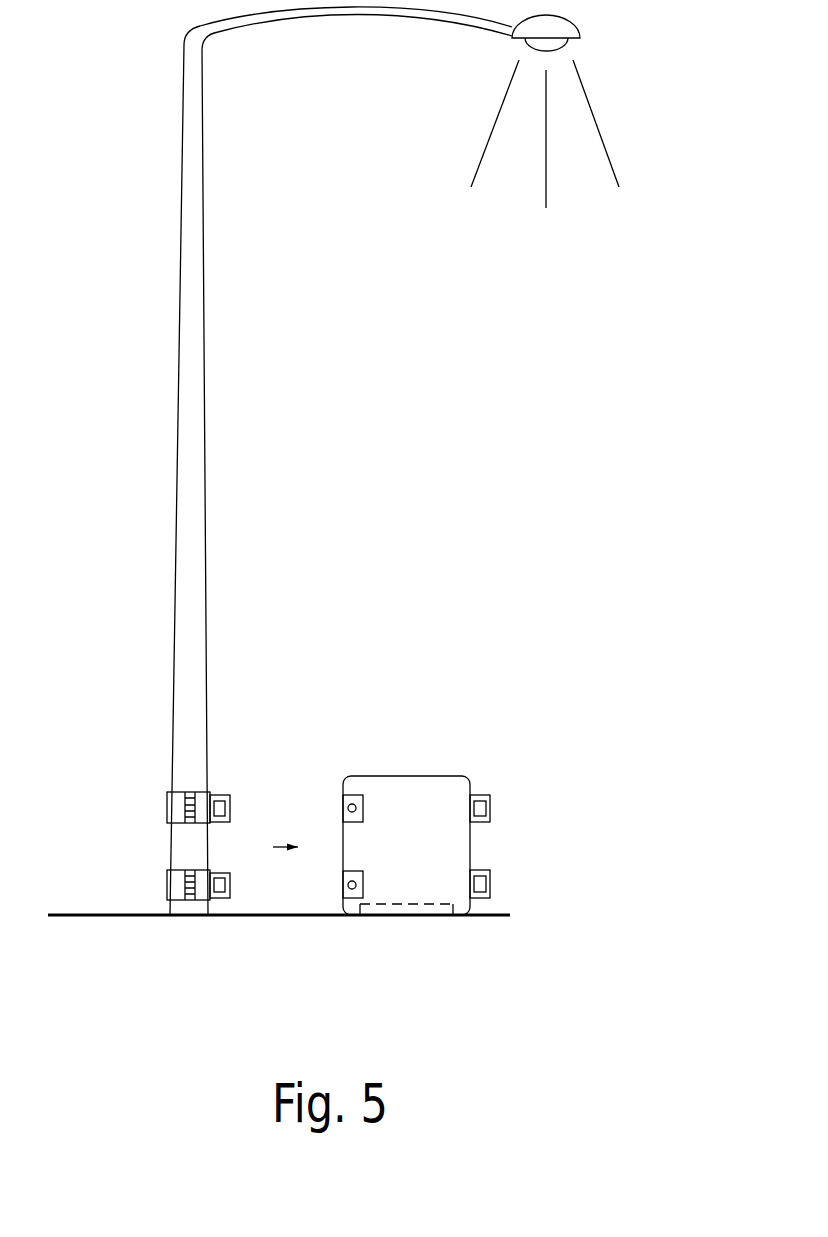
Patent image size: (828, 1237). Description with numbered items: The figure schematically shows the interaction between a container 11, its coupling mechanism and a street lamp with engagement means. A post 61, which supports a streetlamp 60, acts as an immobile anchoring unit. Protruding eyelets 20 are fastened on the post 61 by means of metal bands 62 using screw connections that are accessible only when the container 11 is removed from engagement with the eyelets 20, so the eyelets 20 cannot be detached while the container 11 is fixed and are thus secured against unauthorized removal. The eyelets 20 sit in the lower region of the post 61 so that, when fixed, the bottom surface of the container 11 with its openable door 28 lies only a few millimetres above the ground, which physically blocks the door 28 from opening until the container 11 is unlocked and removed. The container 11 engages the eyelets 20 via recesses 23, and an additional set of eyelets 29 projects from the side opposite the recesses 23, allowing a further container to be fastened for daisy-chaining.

The streetlamp 60 is at (393, 461).
The post 61 is at (195, 183).
The metal bands 62 is at (160, 788).
The eyelets 20 is at (221, 788).
The container 11 is at (480, 777).
The recesses 23 is at (369, 885).
The additional set of eyelets 29 is at (503, 808).
The door 28 is at (423, 918).